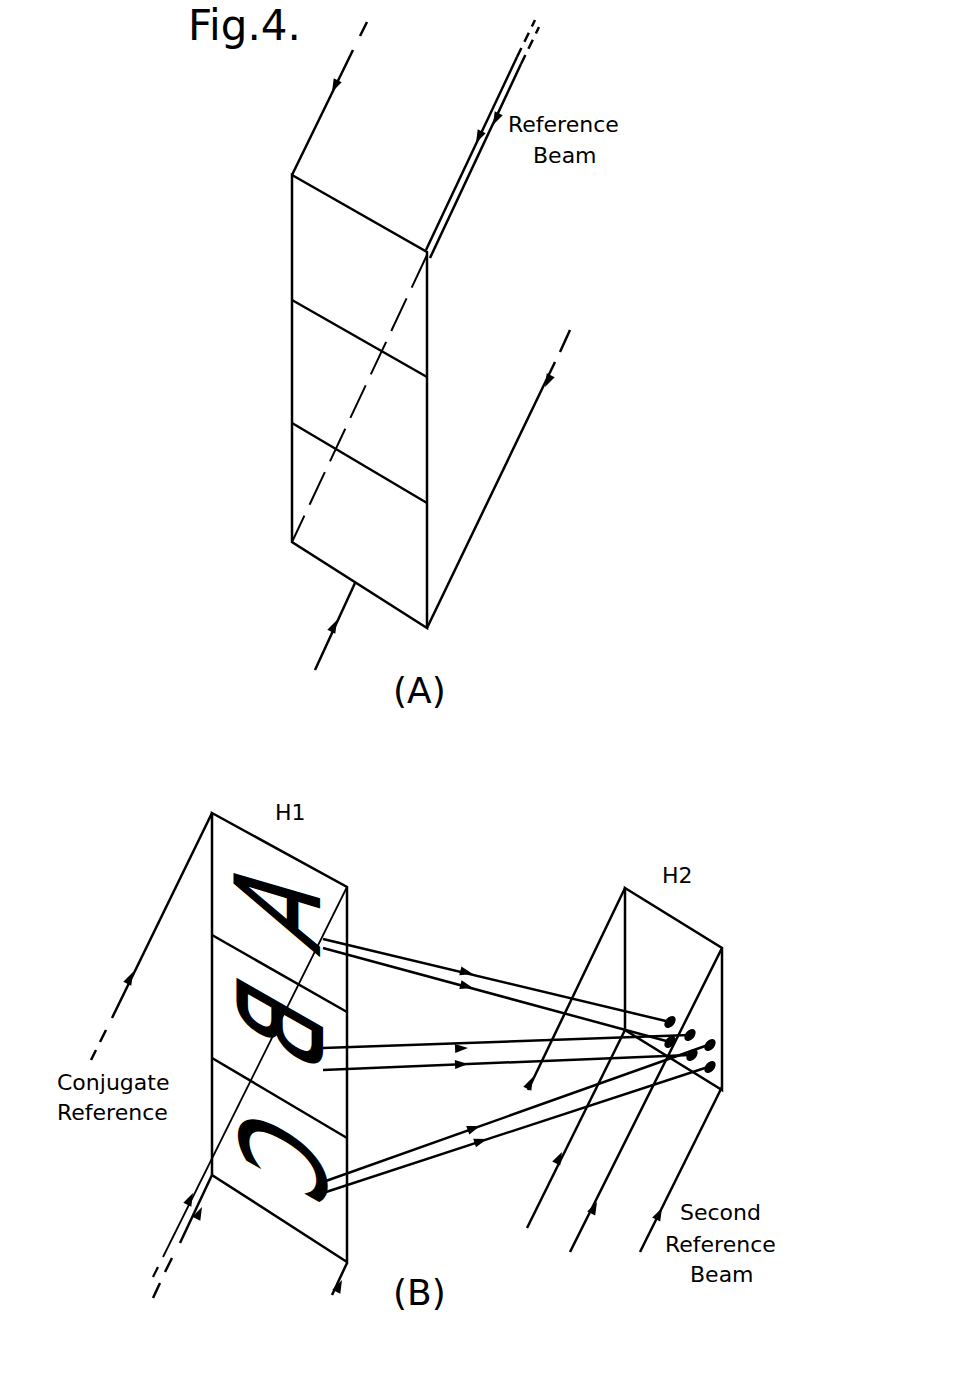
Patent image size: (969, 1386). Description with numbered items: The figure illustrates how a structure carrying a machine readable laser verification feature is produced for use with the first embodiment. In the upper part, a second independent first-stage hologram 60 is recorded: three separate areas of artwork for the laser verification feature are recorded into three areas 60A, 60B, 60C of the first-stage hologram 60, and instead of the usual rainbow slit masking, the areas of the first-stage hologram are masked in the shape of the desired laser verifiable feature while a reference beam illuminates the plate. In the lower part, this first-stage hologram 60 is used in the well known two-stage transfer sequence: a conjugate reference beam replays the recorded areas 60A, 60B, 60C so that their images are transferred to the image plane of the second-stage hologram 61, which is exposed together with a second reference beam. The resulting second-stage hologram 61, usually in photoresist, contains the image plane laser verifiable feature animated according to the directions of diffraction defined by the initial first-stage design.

The H1 hologram 60 is at (282, 548).
The first area of H1 60A is at (292, 238).
The second area of H1 60B is at (292, 347).
The third area of H1 60C is at (292, 457).
The H2 hologram 61 is at (594, 896).